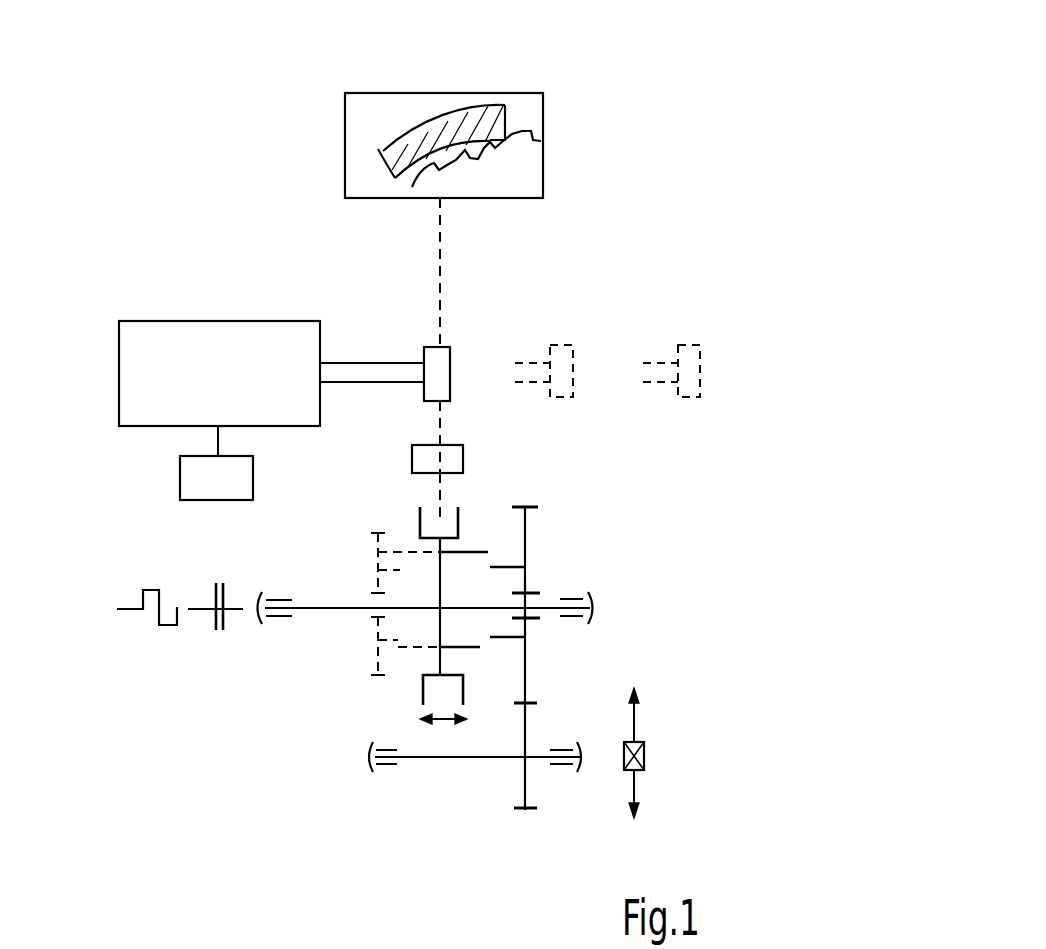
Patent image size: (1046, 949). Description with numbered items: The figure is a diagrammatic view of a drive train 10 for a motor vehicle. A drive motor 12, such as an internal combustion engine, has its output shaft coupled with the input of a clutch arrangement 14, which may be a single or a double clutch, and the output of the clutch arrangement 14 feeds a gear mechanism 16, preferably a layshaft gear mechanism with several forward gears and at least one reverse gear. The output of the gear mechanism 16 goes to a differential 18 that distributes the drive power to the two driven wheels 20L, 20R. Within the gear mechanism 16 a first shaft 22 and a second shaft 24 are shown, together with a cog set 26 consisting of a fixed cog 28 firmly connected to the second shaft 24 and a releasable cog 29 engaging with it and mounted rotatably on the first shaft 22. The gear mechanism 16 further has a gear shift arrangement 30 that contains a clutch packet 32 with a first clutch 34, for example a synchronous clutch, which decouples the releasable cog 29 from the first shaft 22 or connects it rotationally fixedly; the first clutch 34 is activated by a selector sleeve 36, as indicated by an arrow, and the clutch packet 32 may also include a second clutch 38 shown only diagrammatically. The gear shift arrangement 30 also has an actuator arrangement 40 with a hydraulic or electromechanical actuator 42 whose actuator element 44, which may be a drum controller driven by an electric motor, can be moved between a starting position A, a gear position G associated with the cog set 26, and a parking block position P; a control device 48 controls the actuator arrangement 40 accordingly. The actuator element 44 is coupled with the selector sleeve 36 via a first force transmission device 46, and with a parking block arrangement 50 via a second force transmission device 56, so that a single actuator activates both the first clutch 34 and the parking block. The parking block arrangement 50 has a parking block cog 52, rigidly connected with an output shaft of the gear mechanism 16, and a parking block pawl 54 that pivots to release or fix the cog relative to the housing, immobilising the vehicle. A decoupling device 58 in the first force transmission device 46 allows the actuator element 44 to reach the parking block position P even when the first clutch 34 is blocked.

The drive train 10 is at (737, 218).
The drive motor 12 is at (153, 613).
The clutch arrangement 14 is at (212, 618).
The gear mechanism 16 is at (340, 686).
The differential 18 is at (645, 757).
The driven wheel 20R is at (637, 725).
The driven wheel 20L is at (637, 785).
The first shaft 22 is at (320, 605).
The second shaft 24 is at (533, 760).
The cog set 26 is at (525, 820).
The fixed cog 28 is at (523, 785).
The releasable cog 29 is at (527, 683).
The gear shift arrangement 30 is at (738, 295).
The clutch packet 32 is at (390, 706).
The first clutch 34 is at (477, 675).
The selector sleeve 36 is at (423, 690).
The second clutch 38 is at (392, 562).
The actuator arrangement 40 is at (268, 250).
The actuator 42 is at (184, 343).
The actuator element 44 is at (433, 358).
The first force transmission device 46 is at (440, 444).
The control device 48 is at (180, 480).
The parking block arrangement 50 is at (543, 118).
The parking block cog 52 is at (510, 170).
The parking block pawl 54 is at (442, 133).
The second force transmission device 56 is at (447, 267).
The decoupling device 58 is at (456, 473).
The starting position A is at (452, 380).
The gear position G is at (576, 380).
The parking block position P is at (702, 380).